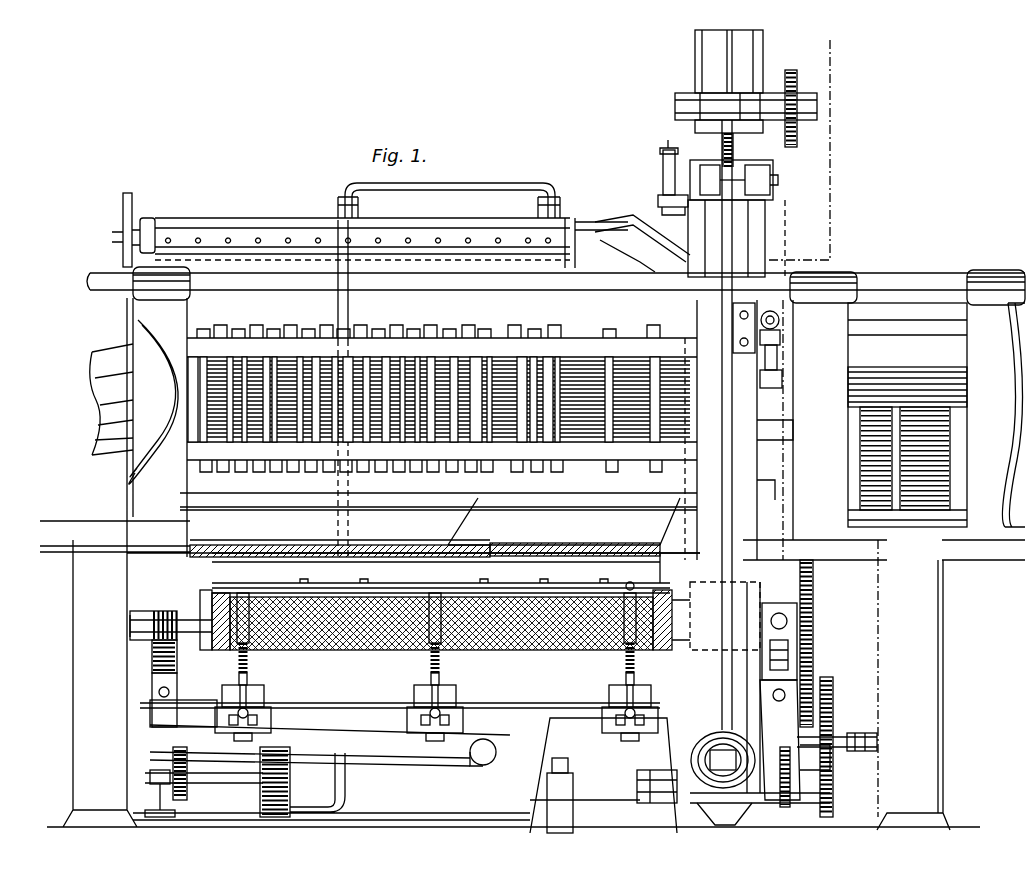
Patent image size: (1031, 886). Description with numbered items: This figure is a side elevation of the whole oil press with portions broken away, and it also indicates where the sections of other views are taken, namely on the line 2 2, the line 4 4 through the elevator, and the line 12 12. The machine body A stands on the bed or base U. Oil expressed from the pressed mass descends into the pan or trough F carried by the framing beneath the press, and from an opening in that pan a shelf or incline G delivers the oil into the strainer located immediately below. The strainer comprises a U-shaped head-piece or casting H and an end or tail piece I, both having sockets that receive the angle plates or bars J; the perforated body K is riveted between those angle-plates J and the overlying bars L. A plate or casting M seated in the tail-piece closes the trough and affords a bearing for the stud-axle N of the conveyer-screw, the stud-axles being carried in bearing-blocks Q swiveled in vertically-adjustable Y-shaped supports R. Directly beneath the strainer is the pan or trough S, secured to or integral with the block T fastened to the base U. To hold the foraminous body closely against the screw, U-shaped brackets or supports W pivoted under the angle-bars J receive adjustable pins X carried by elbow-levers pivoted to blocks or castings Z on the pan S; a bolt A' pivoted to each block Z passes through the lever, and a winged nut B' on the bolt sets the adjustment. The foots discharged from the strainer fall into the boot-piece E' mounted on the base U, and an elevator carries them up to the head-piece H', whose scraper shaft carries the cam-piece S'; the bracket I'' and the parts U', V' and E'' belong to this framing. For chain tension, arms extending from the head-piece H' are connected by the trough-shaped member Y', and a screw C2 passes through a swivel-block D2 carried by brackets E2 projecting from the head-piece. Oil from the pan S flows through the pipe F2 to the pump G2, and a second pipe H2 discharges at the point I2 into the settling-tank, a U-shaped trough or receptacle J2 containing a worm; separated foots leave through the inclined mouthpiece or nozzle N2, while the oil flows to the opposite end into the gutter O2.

The head-piece H' is at (703, 61).
The second pipe H2 is at (410, 690).
The trough-shaped member Y' is at (693, 131).
The screw C2 is at (762, 153).
The brackets E2 is at (775, 176).
The swivel-block D2 is at (770, 190).
The rod U' is at (653, 167).
The bracket V' is at (655, 196).
The cam-piece S' is at (726, 238).
The mouthpiece or nozzle N2 is at (648, 232).
The section line 4 4 is at (764, 36).
The section line 2 2 is at (854, 430).
The U-shaped trough or receptacle J2 is at (262, 218).
The gutter O2 is at (152, 222).
The discharge point I2 is at (562, 202).
The boot-piece E' is at (133, 402).
The roller frame A is at (442, 404).
The bracket I'' is at (779, 401).
The shelf or incline G is at (396, 553).
The pan or trough F is at (550, 510).
The angle plates or bars J is at (306, 590).
The overlying bars L is at (512, 588).
The section line 12 12 is at (632, 582).
The body of the strainer K is at (490, 650).
The plate or casting M is at (212, 597).
The U-shaped head-piece or casting H is at (671, 636).
The end or tail piece I is at (206, 633).
The U-shaped brackets or supports W is at (250, 660).
The adjustable pin X is at (457, 692).
The pan or trough S is at (400, 705).
The winged nut B' is at (479, 715).
The pipe F2 is at (394, 762).
The block or casting Z is at (496, 750).
The bolt A' is at (440, 765).
The block T is at (603, 775).
The bed or base U is at (628, 805).
The bearing-blocks Q is at (162, 610).
The stud-axle N is at (192, 636).
The Y-shaped supports R is at (150, 658).
The pump G2 is at (264, 786).
The post E'' is at (760, 461).